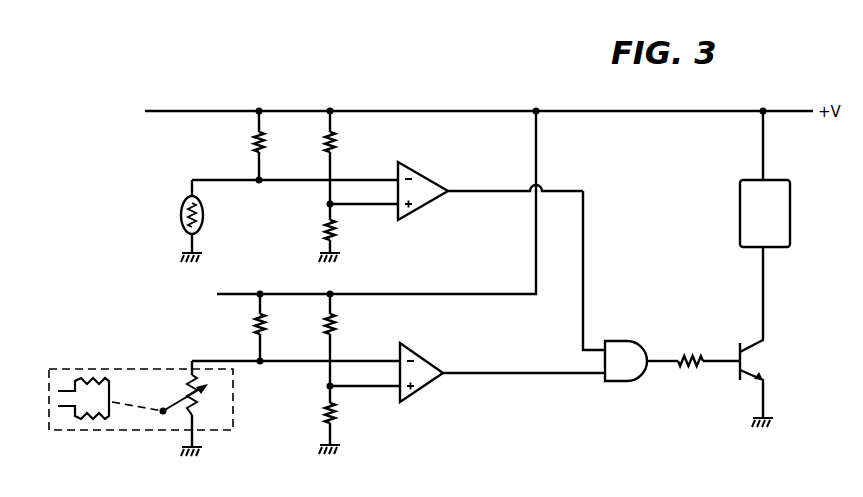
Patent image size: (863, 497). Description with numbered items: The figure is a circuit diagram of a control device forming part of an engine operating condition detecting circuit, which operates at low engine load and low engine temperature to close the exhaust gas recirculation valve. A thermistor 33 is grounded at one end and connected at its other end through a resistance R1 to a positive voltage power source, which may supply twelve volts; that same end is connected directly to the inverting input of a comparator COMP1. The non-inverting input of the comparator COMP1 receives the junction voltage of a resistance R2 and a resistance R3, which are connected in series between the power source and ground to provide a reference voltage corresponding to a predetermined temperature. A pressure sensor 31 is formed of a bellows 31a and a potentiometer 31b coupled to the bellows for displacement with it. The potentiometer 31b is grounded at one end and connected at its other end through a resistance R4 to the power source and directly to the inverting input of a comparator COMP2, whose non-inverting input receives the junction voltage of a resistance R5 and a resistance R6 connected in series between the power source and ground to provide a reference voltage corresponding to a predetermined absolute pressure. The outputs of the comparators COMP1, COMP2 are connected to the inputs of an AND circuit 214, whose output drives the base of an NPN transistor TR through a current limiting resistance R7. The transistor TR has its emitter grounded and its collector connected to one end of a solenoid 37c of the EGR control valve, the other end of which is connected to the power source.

The resistance R1 is at (266, 144).
The resistance R2 is at (337, 144).
The resistance R3 is at (337, 233).
The resistance R4 is at (267, 326).
The resistance R5 is at (337, 326).
The resistance R6 is at (337, 414).
The current limiting resistance R7 is at (690, 368).
The thermistor 33 is at (204, 215).
The comparator COMP1 is at (421, 175).
The comparator COMP2 is at (426, 360).
The AND circuit 214 is at (628, 340).
The NPN transistor TR is at (752, 362).
The solenoid 37c is at (790, 212).
The pressure sensor 31 is at (113, 369).
The bellows 31a is at (103, 419).
The potentiometer 31b is at (200, 402).